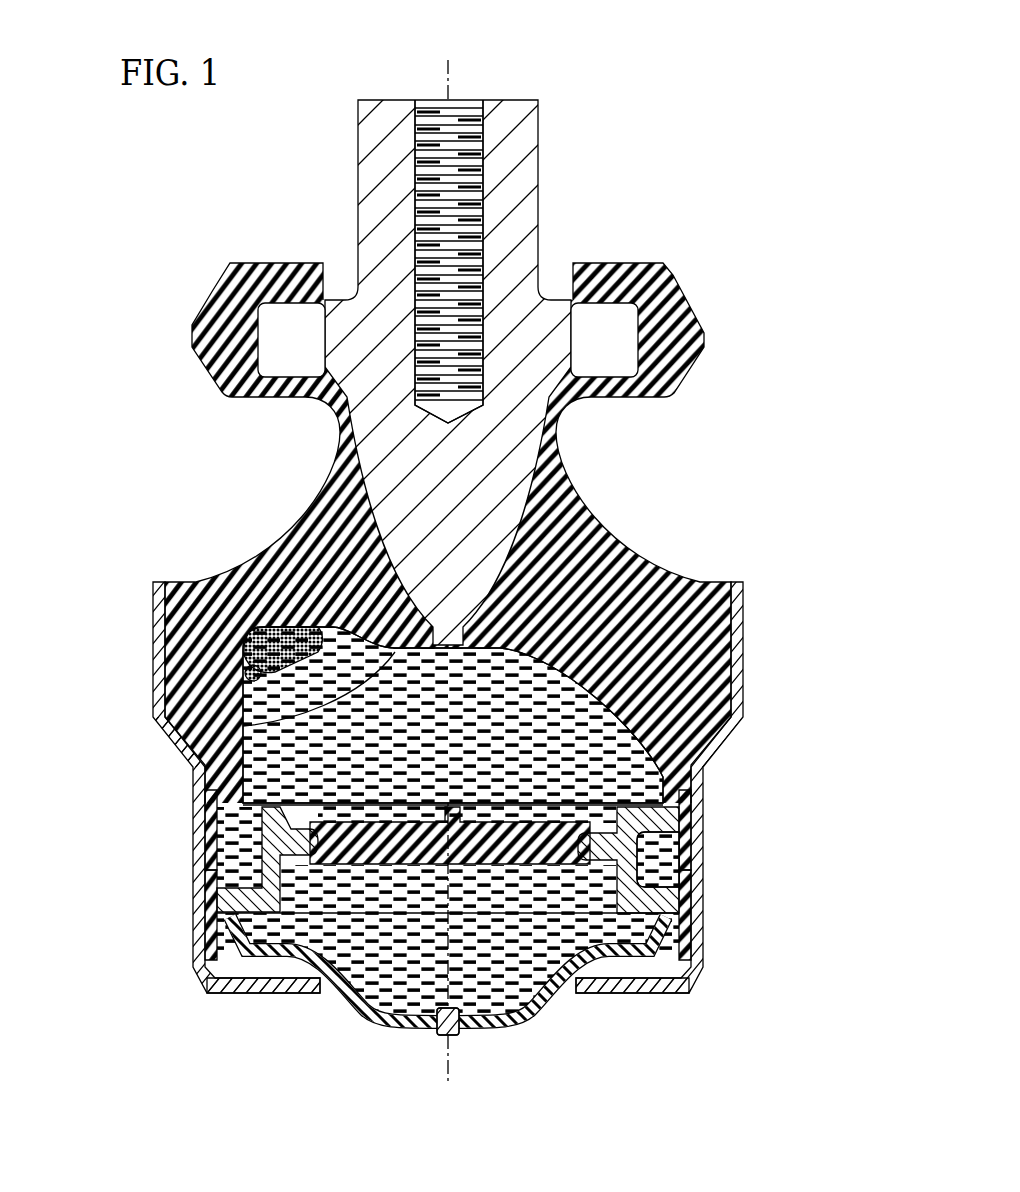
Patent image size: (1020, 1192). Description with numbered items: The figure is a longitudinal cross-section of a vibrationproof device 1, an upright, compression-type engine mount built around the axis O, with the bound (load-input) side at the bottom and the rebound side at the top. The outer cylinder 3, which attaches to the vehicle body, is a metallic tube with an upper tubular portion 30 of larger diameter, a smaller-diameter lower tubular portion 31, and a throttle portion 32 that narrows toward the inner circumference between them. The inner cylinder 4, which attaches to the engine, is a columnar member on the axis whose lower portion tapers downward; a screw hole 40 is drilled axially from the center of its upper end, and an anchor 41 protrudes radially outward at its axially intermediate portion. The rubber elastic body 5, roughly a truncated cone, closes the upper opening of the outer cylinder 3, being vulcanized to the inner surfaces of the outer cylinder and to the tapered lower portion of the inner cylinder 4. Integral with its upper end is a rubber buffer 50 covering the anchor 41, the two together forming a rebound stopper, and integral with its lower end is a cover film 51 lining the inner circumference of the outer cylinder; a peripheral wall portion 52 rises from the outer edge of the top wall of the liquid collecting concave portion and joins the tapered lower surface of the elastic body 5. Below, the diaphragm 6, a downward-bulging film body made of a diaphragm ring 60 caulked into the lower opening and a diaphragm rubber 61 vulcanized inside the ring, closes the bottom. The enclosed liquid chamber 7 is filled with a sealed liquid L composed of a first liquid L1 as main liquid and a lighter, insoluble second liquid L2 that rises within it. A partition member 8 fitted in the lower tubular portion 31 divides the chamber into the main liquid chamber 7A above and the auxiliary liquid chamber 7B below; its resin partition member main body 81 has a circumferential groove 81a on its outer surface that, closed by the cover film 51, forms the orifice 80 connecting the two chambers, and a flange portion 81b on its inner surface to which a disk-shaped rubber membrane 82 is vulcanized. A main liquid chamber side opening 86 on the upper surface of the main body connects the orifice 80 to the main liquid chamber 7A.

The vibrationproof device 1 is at (445, 578).
The axis O is at (443, 78).
The outer cylinder 3 is at (496, 787).
The upper tubular portion 30 is at (746, 690).
The lower tubular portion 31 is at (498, 891).
The throttle portion 32 is at (704, 772).
The inner cylinder 4 is at (448, 333).
The screw hole 40 is at (462, 108).
The anchor 41 is at (313, 322).
The elastic body 5 is at (467, 523).
The buffer 50 is at (683, 303).
The cover film 51 is at (307, 630).
The peripheral wall portion 52 is at (248, 667).
The sealed liquid L is at (357, 715).
The first liquid L1 is at (250, 724).
The second liquid L2 is at (268, 690).
The diaphragm 6 is at (448, 1025).
The diaphragm ring 60 is at (233, 972).
The diaphragm rubber 61 is at (322, 980).
The liquid chamber 7 is at (371, 872).
The main liquid chamber 7A is at (240, 770).
The auxiliary liquid chamber 7B is at (388, 922).
The partition member 8 is at (453, 969).
The orifice 80 is at (684, 866).
The partition member main body 81 is at (670, 950).
The circumferential groove 81a is at (690, 893).
The flange portion 81b is at (275, 840).
The membrane 82 is at (505, 866).
The main liquid chamber side opening 86 is at (245, 806).